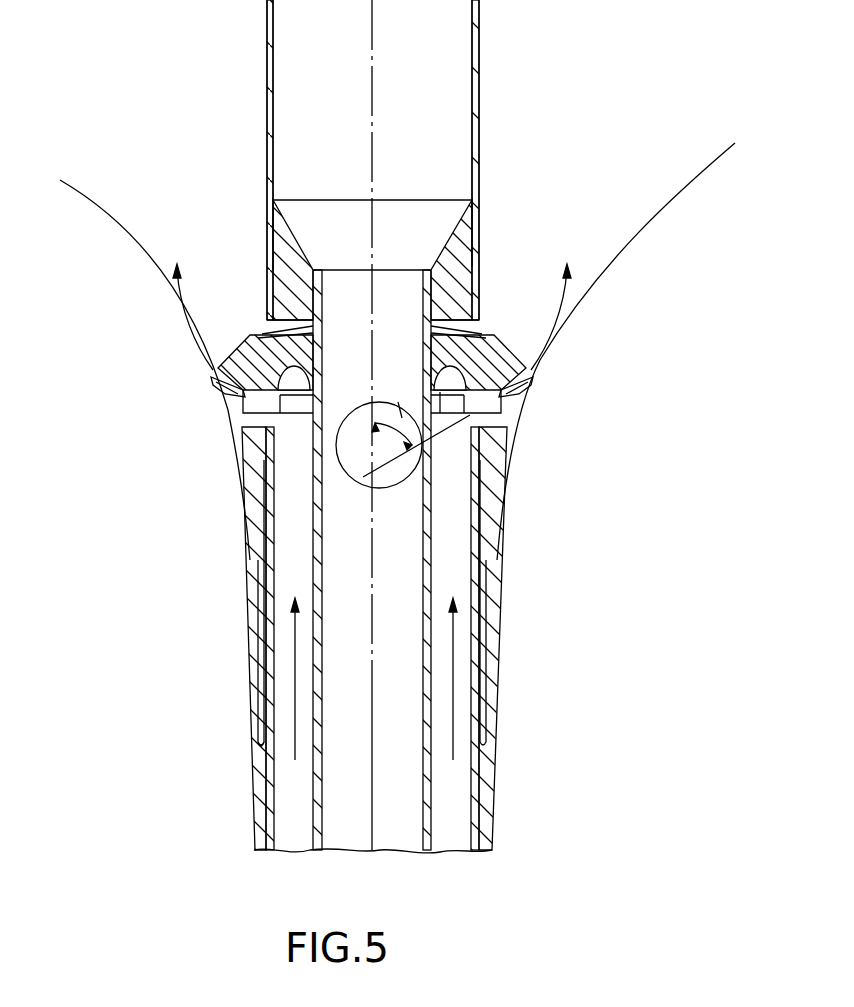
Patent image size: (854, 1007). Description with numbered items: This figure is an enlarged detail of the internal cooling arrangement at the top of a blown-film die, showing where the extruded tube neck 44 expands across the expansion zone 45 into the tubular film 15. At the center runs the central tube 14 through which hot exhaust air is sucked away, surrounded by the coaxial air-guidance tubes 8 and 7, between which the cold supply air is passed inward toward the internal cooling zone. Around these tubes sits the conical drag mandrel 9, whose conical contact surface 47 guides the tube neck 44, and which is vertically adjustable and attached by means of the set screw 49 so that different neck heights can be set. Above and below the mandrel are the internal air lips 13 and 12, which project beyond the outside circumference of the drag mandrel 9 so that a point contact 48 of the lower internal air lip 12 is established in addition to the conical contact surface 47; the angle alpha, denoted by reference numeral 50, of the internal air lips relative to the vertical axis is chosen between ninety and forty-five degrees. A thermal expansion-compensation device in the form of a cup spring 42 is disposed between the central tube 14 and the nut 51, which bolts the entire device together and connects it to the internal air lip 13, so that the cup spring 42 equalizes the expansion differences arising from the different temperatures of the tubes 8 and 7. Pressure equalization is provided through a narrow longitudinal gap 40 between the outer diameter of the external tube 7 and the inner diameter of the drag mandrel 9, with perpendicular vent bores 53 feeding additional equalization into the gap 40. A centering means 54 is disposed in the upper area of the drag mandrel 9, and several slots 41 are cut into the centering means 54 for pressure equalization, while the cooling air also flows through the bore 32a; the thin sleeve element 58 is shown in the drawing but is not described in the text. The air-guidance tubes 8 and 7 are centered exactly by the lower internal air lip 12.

The central tube 14 is at (268, 104).
The expansion zone 45 is at (92, 207).
The nut 51 is at (460, 268).
The cup spring 42 is at (283, 333).
The tubular film 15 is at (630, 230).
The internal air lip 13 is at (498, 335).
The angle alpha 50 is at (381, 402).
The internal air lip 12 is at (214, 392).
The point contact 48 is at (530, 382).
The centering means 54 is at (243, 426).
The inner sleeve 58 is at (250, 462).
The slots 41 is at (487, 430).
The bore 32a is at (453, 426).
The set screw 49 is at (480, 435).
The conical drag mandrel 9 is at (250, 545).
The conical contact surface 47 is at (500, 562).
The vent bores 53 is at (262, 625).
The longitudinal gap 40 is at (262, 746).
The tube neck 44 is at (493, 810).
The external tube 7 is at (272, 852).
The tube 8 is at (320, 852).